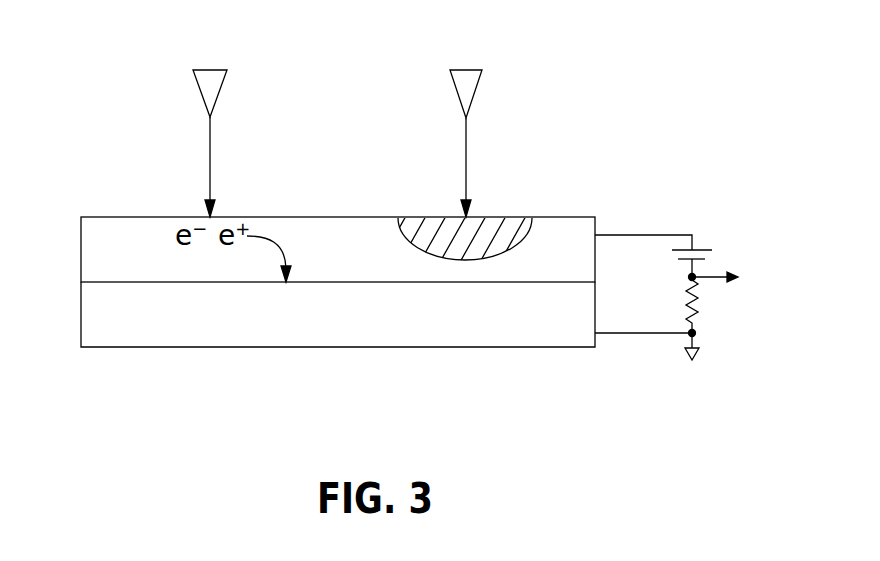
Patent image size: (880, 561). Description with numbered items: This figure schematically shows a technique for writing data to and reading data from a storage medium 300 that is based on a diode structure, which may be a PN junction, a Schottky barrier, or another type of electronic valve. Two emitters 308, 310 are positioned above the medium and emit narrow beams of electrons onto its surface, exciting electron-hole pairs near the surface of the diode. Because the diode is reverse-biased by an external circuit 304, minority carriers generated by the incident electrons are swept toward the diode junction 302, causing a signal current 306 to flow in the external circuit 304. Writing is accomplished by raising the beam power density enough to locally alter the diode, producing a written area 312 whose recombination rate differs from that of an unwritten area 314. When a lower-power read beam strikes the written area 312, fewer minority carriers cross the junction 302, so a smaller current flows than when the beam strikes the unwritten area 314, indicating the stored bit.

The storage medium 300 is at (117, 147).
The diode junction 302 is at (185, 282).
The external circuit 304 is at (700, 250).
The signal current 306 is at (705, 281).
The emitter 308 is at (216, 70).
The emitter 310 is at (473, 70).
The written area 312 is at (518, 217).
The unwritten area 314 is at (242, 217).